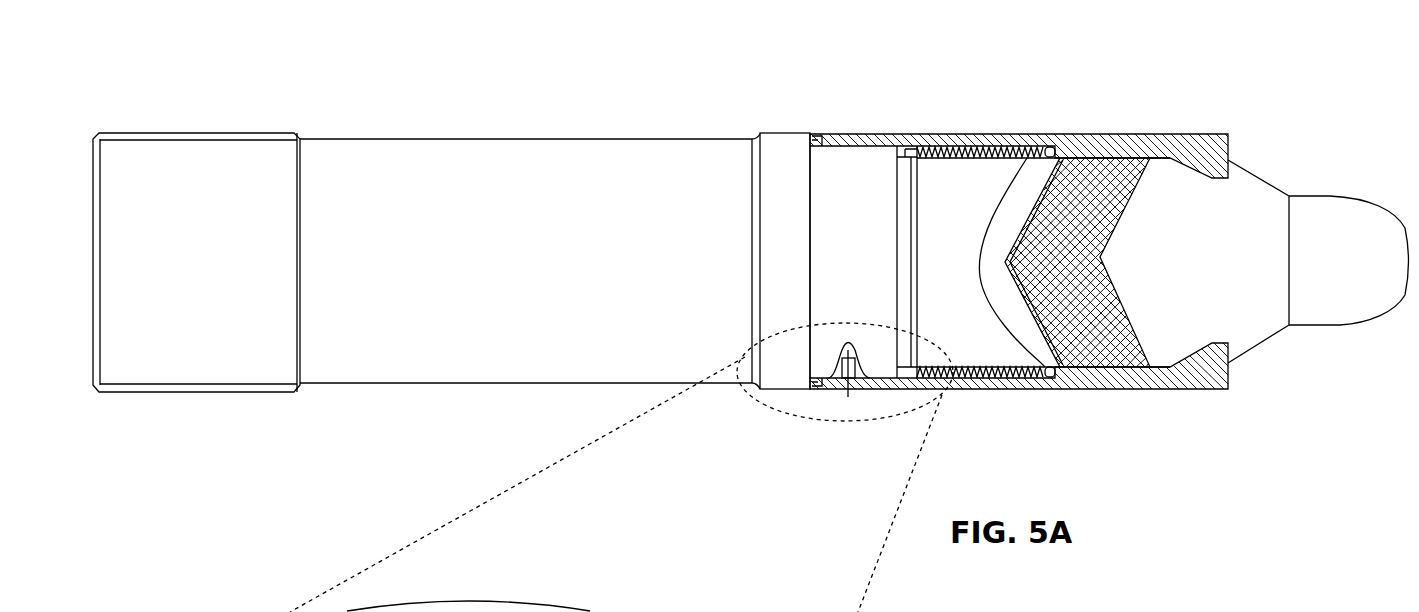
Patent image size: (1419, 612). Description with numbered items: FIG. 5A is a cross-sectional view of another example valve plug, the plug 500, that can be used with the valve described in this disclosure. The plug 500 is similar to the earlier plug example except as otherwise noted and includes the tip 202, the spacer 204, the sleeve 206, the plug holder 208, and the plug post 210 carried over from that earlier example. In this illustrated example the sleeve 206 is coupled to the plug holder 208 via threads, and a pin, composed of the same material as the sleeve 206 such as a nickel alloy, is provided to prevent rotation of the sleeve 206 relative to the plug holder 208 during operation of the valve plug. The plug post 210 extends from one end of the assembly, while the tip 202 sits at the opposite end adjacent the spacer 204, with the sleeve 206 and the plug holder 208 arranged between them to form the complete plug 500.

The plug 500 is at (1287, 80).
The plug post 210 is at (433, 134).
The sleeve 206 is at (822, 137).
The plug holder 208 is at (945, 140).
The spacer 204 is at (1087, 153).
The tip 202 is at (1332, 196).